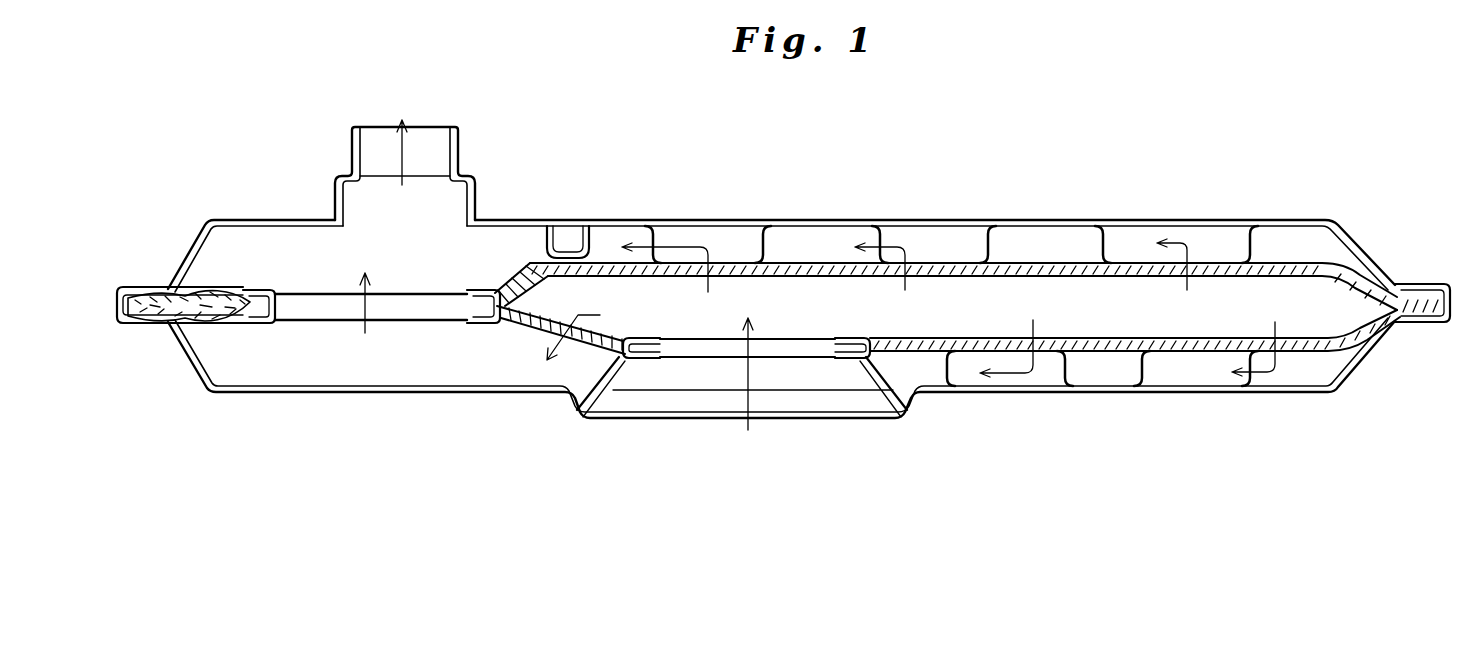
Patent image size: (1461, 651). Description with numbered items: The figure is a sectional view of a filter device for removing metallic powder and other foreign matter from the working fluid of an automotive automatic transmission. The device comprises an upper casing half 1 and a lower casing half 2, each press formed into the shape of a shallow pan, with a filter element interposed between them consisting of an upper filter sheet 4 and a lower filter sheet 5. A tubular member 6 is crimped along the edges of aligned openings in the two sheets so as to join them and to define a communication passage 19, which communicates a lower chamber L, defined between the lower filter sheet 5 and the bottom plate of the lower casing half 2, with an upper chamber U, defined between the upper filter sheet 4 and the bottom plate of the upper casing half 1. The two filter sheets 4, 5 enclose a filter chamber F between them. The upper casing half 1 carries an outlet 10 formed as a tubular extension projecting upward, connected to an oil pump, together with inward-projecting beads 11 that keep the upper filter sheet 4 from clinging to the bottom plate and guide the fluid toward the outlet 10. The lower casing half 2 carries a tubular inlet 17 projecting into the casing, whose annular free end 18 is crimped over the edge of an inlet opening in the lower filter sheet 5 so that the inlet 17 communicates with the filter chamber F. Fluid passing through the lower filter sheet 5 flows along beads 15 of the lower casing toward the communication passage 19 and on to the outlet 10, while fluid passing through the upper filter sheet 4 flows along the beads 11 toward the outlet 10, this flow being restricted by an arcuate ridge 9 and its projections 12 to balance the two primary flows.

The upper casing half 1 is at (1273, 220).
The lower casing half 2 is at (1288, 398).
The upper filter sheet 4 is at (1033, 257).
The lower filter sheet 5 is at (1108, 358).
The tubular member 6 is at (400, 323).
The arcuate ridge 9 is at (582, 254).
The outlet 10 is at (350, 152).
The beads 11 is at (943, 250).
The projections 12 is at (547, 243).
The beads 15 is at (1193, 370).
The tubular inlet 17 is at (880, 385).
The annular free end 18 is at (856, 338).
The communication passage 19 is at (275, 326).
The upper chamber U is at (1307, 250).
The lower chamber L is at (1320, 362).
The filter chamber F is at (1332, 298).